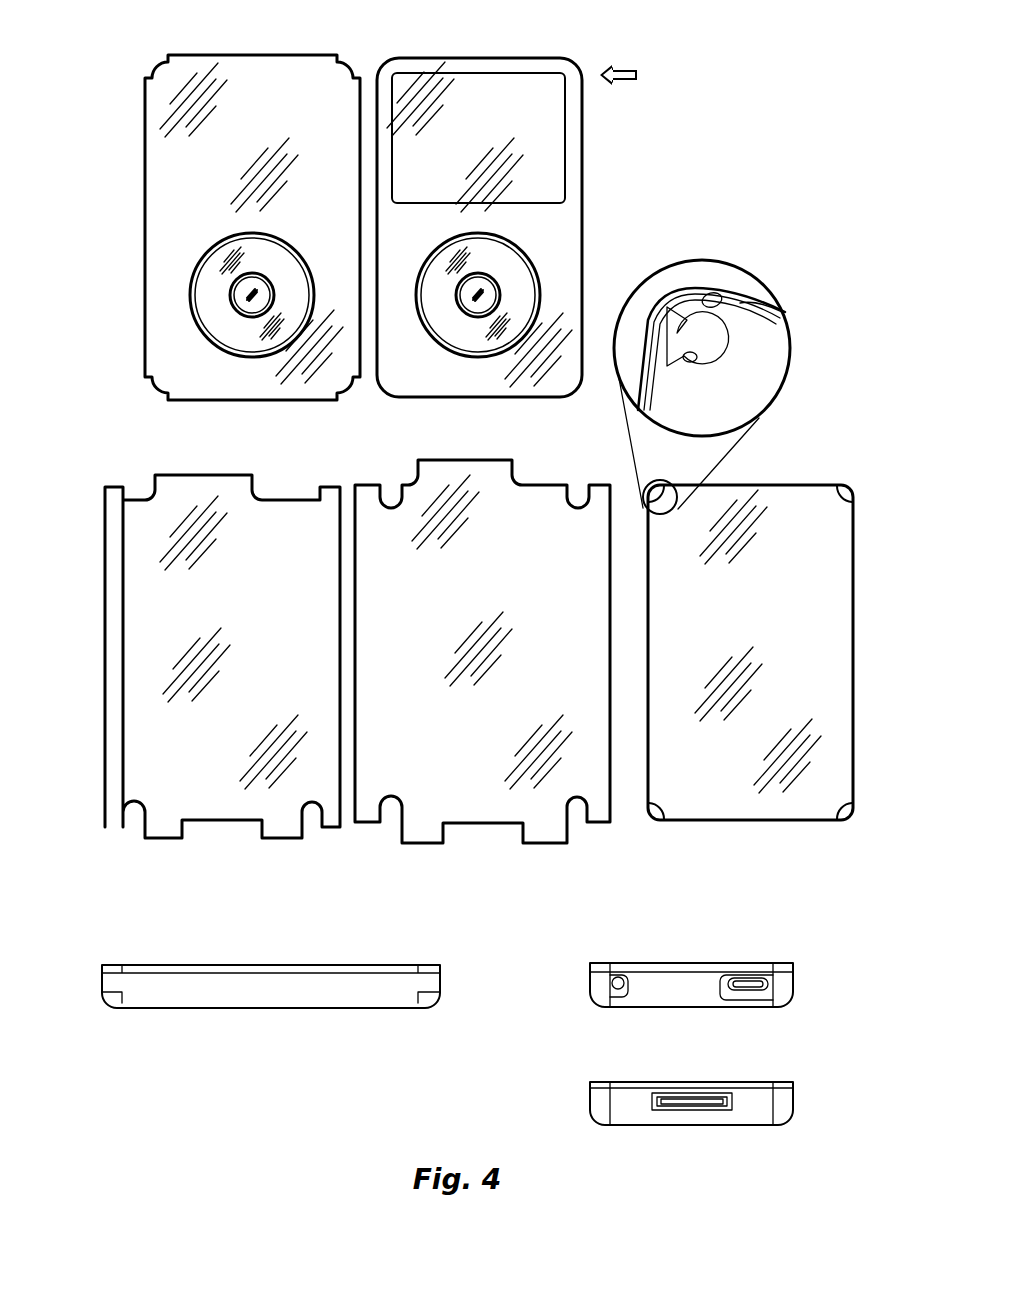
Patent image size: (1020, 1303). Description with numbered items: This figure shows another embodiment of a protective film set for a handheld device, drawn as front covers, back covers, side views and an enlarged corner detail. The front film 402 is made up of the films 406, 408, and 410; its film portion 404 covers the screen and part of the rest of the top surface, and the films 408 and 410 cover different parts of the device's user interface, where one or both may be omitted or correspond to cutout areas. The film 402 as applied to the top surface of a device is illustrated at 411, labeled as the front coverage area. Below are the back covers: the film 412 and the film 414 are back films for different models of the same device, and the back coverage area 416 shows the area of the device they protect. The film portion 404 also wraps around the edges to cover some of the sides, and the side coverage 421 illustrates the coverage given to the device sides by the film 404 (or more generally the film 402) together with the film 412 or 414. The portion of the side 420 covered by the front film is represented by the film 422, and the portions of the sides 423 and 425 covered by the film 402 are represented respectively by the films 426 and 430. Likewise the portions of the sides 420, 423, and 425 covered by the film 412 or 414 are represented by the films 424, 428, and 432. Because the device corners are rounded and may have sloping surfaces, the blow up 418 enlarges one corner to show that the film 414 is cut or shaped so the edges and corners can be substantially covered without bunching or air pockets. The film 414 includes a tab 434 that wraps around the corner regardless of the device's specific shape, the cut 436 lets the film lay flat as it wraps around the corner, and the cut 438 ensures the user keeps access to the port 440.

The film 402 is at (369, 215).
The film portion 404 is at (160, 386).
The film 406 is at (163, 228).
The film 408 is at (219, 270).
The film 410 is at (243, 296).
The film applied to top surface of device 411 is at (585, 150).
The film 412 is at (222, 826).
The film 414 is at (483, 826).
The back coverage area 416 is at (733, 822).
The blow up 418 is at (684, 261).
The side 420 is at (318, 1002).
The side coverage 421 is at (287, 1001).
The film 422 is at (388, 964).
The side 423 is at (693, 966).
The film 424 is at (402, 998).
The side 425 is at (732, 1118).
The film 426 is at (728, 968).
The film 428 is at (637, 998).
The film 430 is at (762, 1085).
The film 432 is at (738, 1115).
The tab 434 is at (710, 337).
The cut 436 is at (692, 360).
The cut 438 is at (743, 306).
The port 440 is at (716, 294).